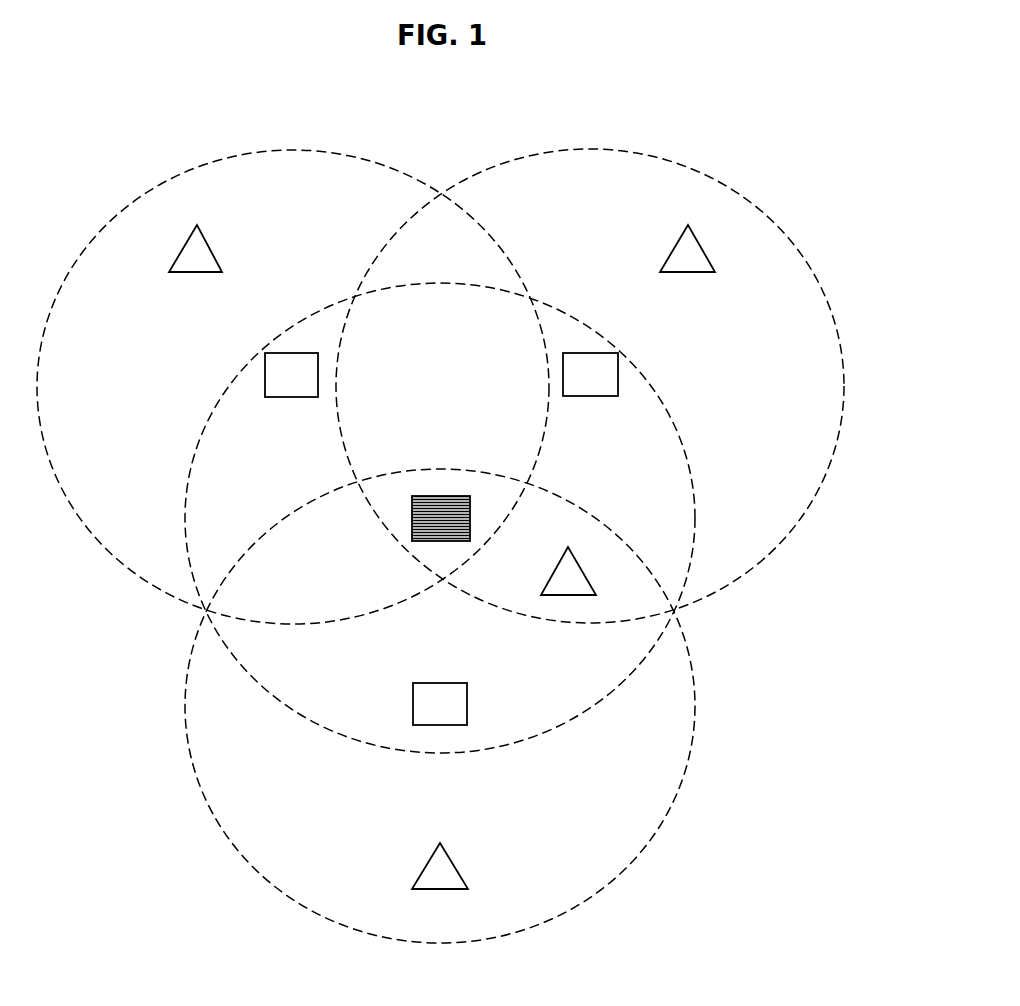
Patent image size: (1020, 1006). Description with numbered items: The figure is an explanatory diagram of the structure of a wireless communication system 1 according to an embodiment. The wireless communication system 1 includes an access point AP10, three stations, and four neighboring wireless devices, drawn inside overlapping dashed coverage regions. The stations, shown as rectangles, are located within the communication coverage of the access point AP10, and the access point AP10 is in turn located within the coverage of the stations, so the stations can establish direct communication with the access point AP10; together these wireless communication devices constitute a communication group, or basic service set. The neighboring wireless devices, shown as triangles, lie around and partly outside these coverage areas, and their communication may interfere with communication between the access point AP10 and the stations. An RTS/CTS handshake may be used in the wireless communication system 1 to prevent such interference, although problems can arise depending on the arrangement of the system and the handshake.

The wireless communication system 1 is at (92, 855).
The access point AP10 is at (440, 496).